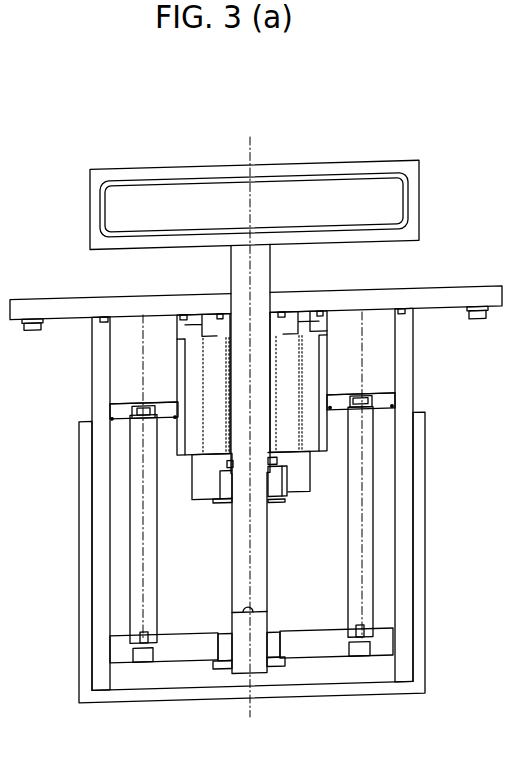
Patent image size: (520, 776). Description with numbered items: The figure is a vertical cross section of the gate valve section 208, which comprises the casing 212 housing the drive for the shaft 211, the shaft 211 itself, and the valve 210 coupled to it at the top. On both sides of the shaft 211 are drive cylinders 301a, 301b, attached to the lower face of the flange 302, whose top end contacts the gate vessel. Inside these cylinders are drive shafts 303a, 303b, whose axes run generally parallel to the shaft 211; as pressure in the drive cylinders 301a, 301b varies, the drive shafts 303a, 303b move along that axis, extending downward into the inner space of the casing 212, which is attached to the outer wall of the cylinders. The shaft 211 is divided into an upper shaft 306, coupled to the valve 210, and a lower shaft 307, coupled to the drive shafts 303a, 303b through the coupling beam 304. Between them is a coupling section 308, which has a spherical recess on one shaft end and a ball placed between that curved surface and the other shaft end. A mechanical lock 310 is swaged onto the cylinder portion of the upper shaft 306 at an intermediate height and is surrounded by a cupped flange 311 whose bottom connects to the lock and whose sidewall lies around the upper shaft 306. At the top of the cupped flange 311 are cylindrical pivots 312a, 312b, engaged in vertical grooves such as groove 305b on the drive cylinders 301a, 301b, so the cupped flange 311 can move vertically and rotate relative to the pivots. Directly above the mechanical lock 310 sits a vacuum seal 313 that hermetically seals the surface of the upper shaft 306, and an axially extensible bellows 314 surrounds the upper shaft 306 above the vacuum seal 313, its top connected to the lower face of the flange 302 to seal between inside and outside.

The gate valve section 208 is at (490, 128).
The valve 210 is at (303, 163).
The shaft 211 is at (267, 269).
The casing 212 is at (80, 652).
The drive cylinder 301a is at (410, 364).
The drive cylinder 301b is at (97, 378).
The flange 302 is at (92, 298).
The drive shaft 303a is at (370, 553).
The drive shaft 303b is at (133, 585).
The coupling beam 304 is at (175, 656).
The groove 305b is at (193, 363).
The upper shaft 306 is at (238, 573).
The lower shaft 307 is at (260, 680).
The coupling section 308 is at (255, 606).
The mechanical lock 310 is at (278, 504).
The cupped flange 311 is at (208, 502).
The pivot 312a is at (327, 397).
The pivot 312b is at (183, 424).
The vacuum seal 313 is at (286, 497).
The bellows 314 is at (217, 367).